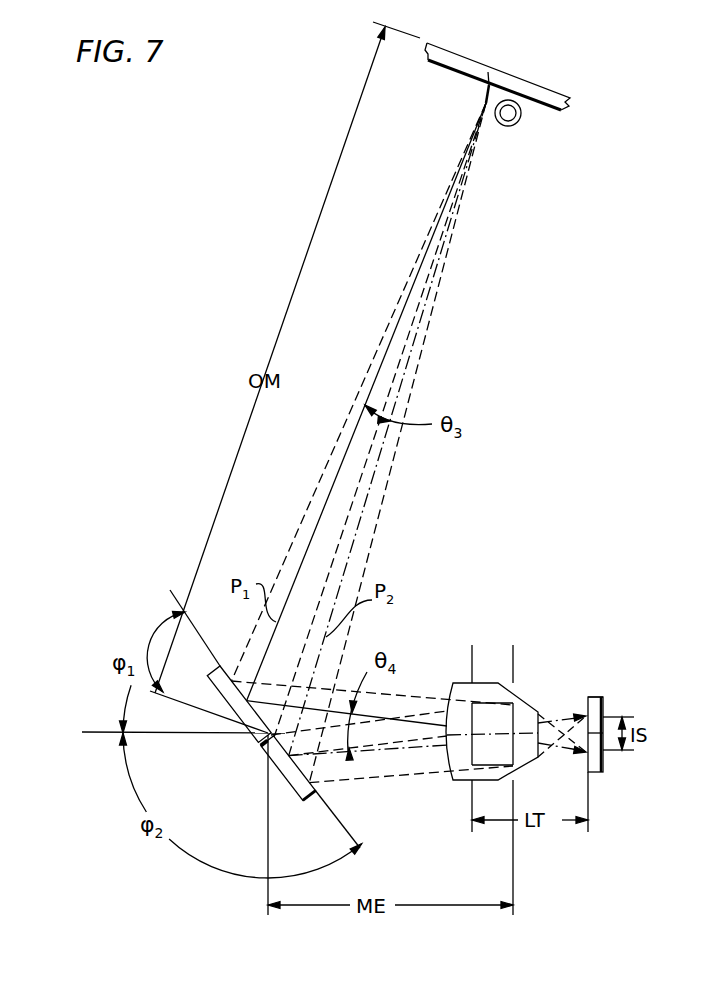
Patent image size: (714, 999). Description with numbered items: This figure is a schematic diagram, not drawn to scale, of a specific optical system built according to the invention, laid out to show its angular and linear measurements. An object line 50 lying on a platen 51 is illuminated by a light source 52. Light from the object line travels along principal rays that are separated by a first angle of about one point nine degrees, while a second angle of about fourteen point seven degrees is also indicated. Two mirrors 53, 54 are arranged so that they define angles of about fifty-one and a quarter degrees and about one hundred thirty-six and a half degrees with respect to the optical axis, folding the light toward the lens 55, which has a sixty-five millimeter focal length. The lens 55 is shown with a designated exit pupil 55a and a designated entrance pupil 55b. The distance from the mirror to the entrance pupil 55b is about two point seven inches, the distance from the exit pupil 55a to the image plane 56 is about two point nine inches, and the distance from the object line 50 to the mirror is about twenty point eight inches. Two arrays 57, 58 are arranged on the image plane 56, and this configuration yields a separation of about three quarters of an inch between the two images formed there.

The object line 50 is at (488, 72).
The platen 51 is at (557, 92).
The light source 52 is at (509, 126).
The mirror 53 is at (222, 702).
The mirror 54 is at (279, 776).
The lens 55 is at (542, 694).
The exit pupil 55a is at (481, 682).
The entrance pupil 55b is at (529, 688).
The image plane 56 is at (592, 808).
The array 57 is at (605, 770).
The array 58 is at (604, 700).